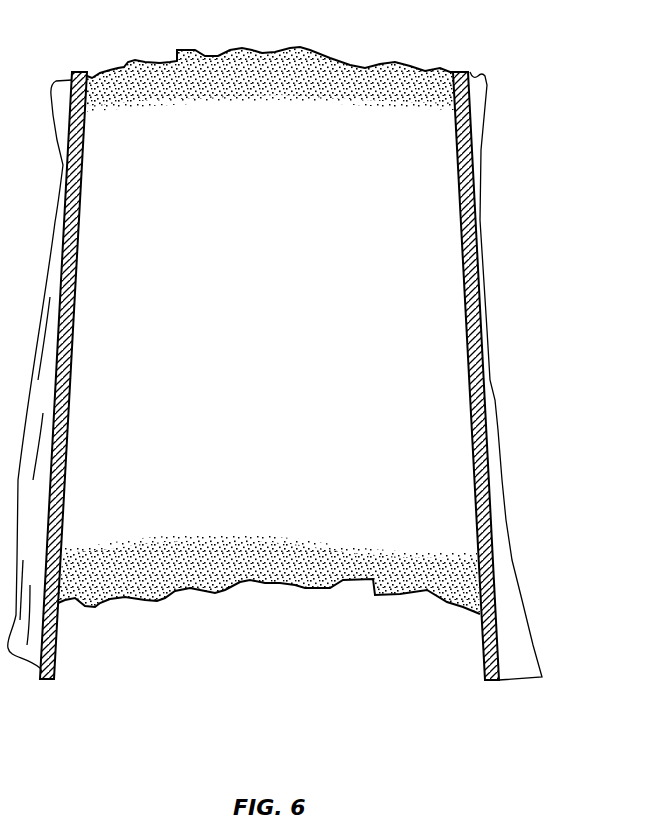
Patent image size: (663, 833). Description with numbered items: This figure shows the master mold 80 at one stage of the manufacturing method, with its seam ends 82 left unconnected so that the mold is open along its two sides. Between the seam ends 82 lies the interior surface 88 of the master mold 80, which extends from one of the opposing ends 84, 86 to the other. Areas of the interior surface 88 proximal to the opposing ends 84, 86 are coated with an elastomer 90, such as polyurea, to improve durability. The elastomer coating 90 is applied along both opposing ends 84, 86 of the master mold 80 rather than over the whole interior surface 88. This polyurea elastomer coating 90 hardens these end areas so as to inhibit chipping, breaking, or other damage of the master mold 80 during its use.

The master mold 80 is at (522, 61).
The seam ends 82 is at (81, 280).
The opposing end 84 is at (310, 584).
The opposing end 86 is at (287, 50).
The interior surface 88 is at (278, 259).
The elastomer coating 90 is at (272, 104).